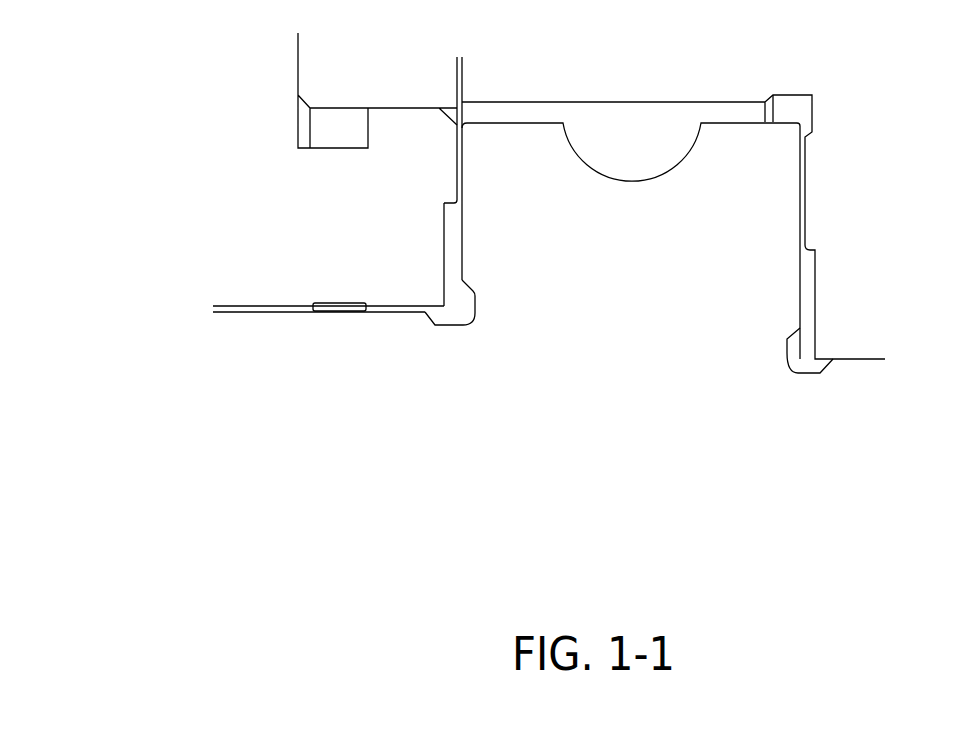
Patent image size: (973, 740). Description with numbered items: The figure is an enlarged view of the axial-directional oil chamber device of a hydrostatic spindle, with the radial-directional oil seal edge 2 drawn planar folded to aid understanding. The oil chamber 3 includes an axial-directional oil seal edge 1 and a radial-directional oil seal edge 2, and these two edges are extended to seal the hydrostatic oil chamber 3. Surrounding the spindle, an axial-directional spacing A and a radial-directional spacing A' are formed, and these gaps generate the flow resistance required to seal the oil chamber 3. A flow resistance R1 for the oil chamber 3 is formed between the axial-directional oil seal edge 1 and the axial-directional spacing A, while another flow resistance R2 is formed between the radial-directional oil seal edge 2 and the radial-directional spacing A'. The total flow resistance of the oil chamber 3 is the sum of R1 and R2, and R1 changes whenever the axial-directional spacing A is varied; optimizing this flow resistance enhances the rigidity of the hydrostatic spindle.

The axial-directional oil seal edge 1 is at (457, 155).
The radial-directional oil seal edge 2 is at (398, 308).
The oil chamber 3 is at (452, 277).
The flow resistance R1 is at (492, 263).
The flow resistance R2 is at (402, 322).
The axial-directional spacing A is at (470, 51).
The radial-directional spacing A' is at (210, 323).